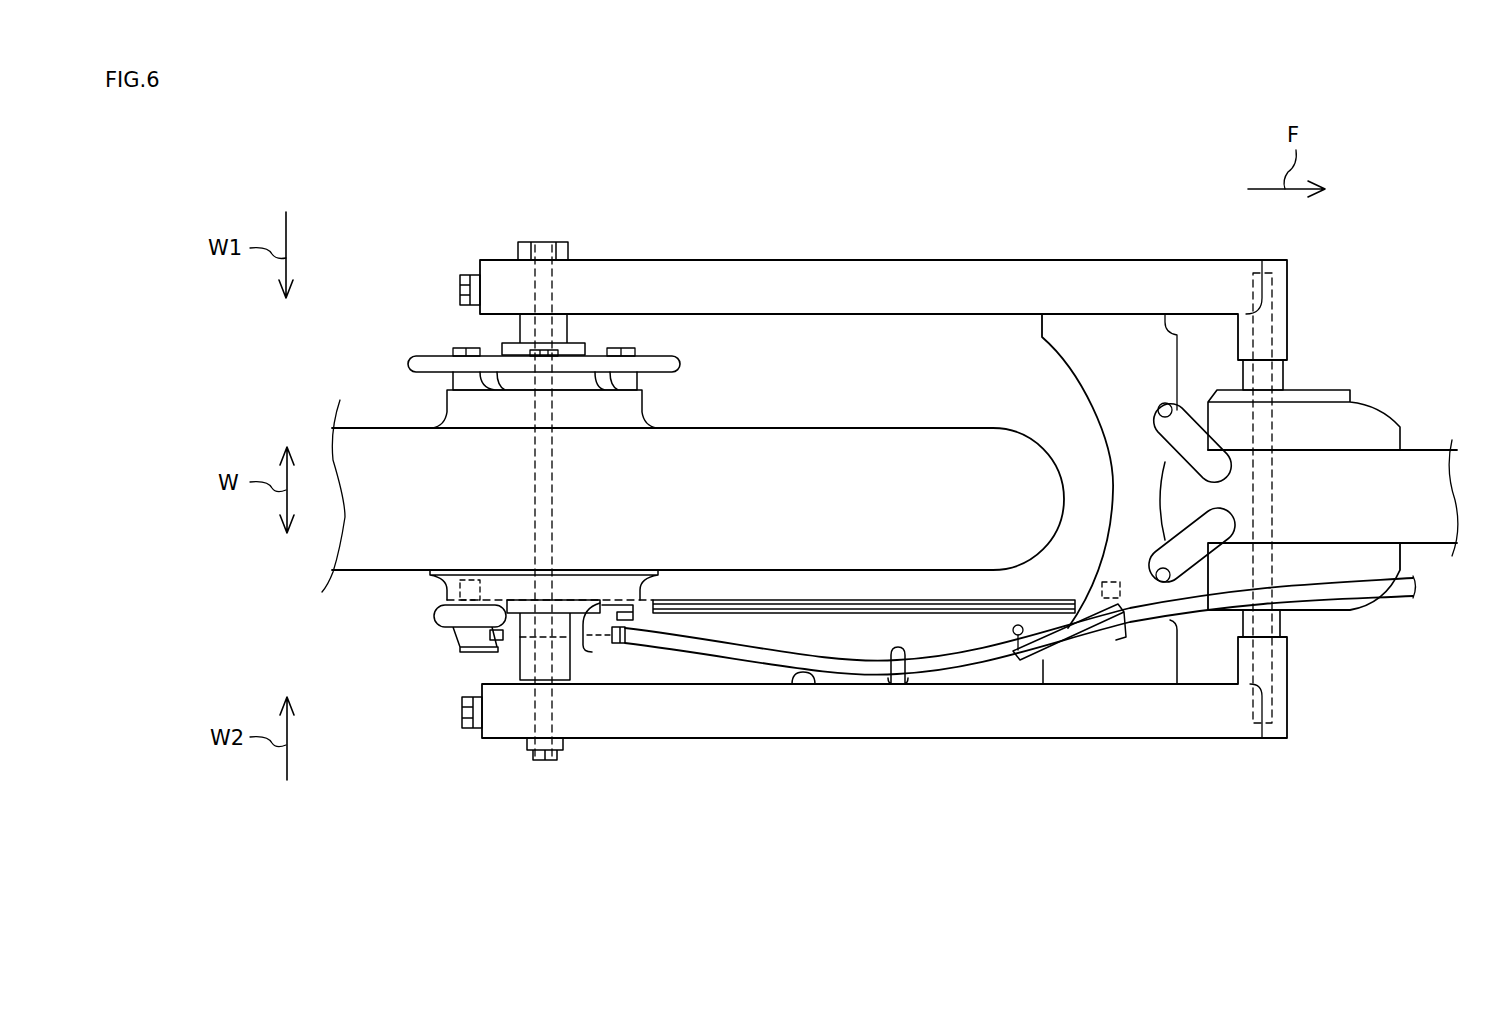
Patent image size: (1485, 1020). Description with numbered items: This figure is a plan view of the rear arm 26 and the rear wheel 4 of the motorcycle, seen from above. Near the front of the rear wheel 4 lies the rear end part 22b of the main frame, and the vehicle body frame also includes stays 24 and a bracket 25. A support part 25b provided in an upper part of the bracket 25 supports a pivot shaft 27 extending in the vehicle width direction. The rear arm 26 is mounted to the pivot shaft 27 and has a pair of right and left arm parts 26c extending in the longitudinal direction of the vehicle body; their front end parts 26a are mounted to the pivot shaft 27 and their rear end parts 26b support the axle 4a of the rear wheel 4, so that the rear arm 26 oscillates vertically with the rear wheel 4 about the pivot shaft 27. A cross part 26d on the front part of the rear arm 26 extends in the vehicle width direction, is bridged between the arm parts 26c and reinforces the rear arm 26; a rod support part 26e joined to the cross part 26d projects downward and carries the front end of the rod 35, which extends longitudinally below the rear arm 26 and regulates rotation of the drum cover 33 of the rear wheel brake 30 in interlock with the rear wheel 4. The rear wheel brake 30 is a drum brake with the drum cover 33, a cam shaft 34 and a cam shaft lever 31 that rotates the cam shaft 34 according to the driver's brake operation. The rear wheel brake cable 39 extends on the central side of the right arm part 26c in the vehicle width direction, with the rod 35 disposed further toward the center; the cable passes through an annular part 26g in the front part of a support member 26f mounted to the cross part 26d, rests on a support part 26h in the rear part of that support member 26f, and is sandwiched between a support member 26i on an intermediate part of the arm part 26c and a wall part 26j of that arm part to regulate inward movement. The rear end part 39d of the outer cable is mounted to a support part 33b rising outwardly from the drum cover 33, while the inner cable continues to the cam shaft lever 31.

The rear wheel 4 is at (375, 430).
The axle 4a is at (535, 285).
The rear end part 22b is at (1173, 483).
The stays 24 is at (1185, 425).
The bracket 25 is at (1345, 430).
The support part 25b is at (1280, 376).
The rear arm 26 is at (984, 245).
The front end part 26a is at (1243, 325).
The rear end part 26b is at (495, 272).
The arm part 26c is at (905, 270).
The cross part 26d is at (1072, 354).
The rod support part 26e is at (1100, 590).
The support member 26f is at (1043, 672).
The annular part 26g is at (1130, 628).
The support part 26h is at (993, 633).
The support member 26i is at (898, 655).
The wall part 26j is at (795, 676).
The pivot shaft 27 is at (1280, 300).
The rear wheel brake 30 is at (415, 590).
The cam shaft lever 31 is at (458, 628).
The drum cover 33 is at (520, 650).
The support part 33b is at (572, 640).
The cam shaft 34 is at (448, 598).
The rod 35 is at (795, 605).
The rear wheel brake cable 39 is at (748, 650).
The rear end part 39d is at (600, 645).